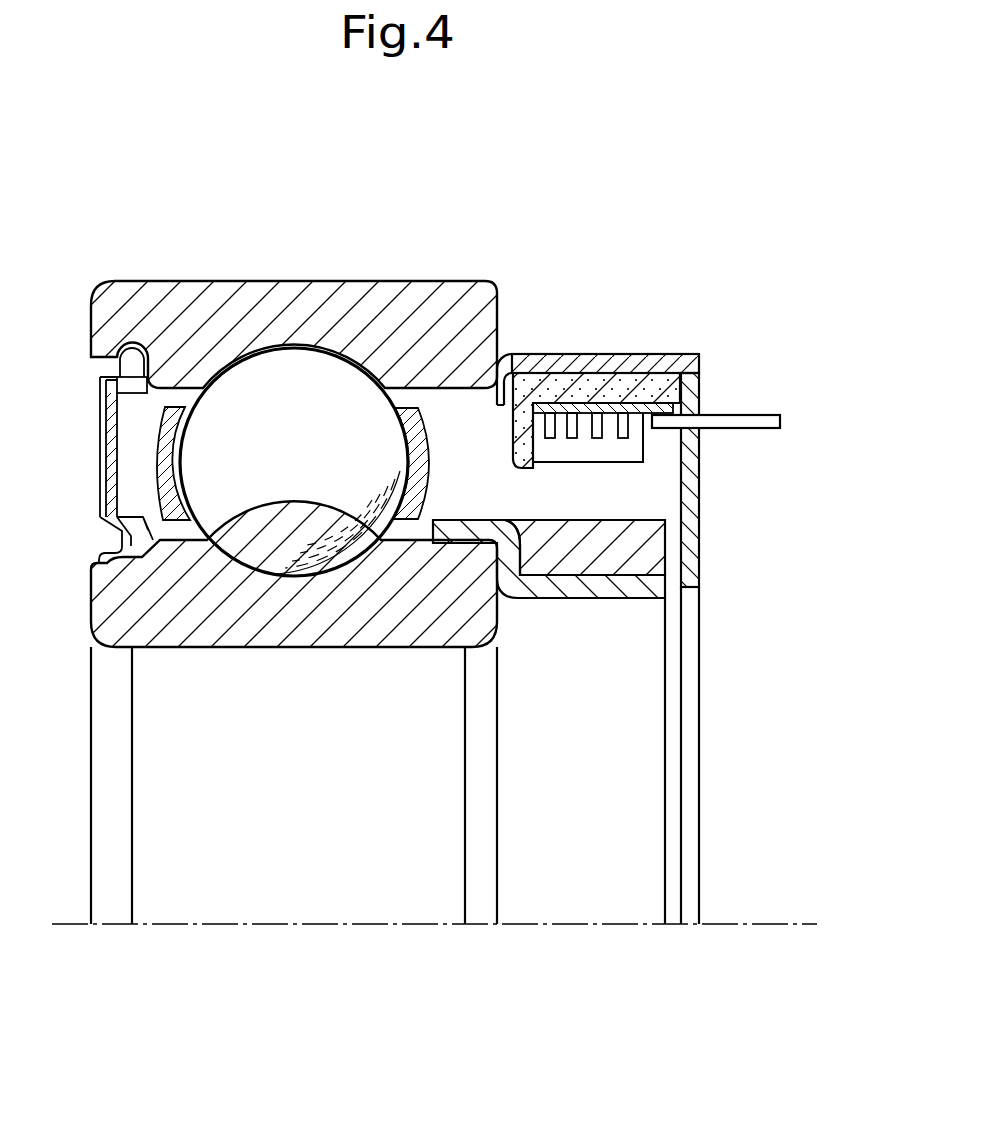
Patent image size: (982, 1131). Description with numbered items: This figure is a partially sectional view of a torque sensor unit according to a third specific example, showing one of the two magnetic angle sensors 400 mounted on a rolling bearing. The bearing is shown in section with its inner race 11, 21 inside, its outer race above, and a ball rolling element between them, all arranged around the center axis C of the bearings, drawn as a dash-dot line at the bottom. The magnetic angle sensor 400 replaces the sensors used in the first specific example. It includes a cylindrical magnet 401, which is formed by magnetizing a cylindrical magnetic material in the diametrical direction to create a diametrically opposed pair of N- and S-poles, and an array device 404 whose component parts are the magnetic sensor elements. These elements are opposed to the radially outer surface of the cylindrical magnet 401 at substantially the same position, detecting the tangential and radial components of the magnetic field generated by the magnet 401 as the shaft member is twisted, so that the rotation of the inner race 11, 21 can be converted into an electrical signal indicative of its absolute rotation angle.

The second inner race 21 is at (300, 308).
The first inner race 11 is at (298, 613).
The magnetic angle sensor 400 is at (663, 566).
The cylindrical magnet 401 is at (613, 553).
The array device 404 is at (646, 450).
The center axis C is at (790, 924).